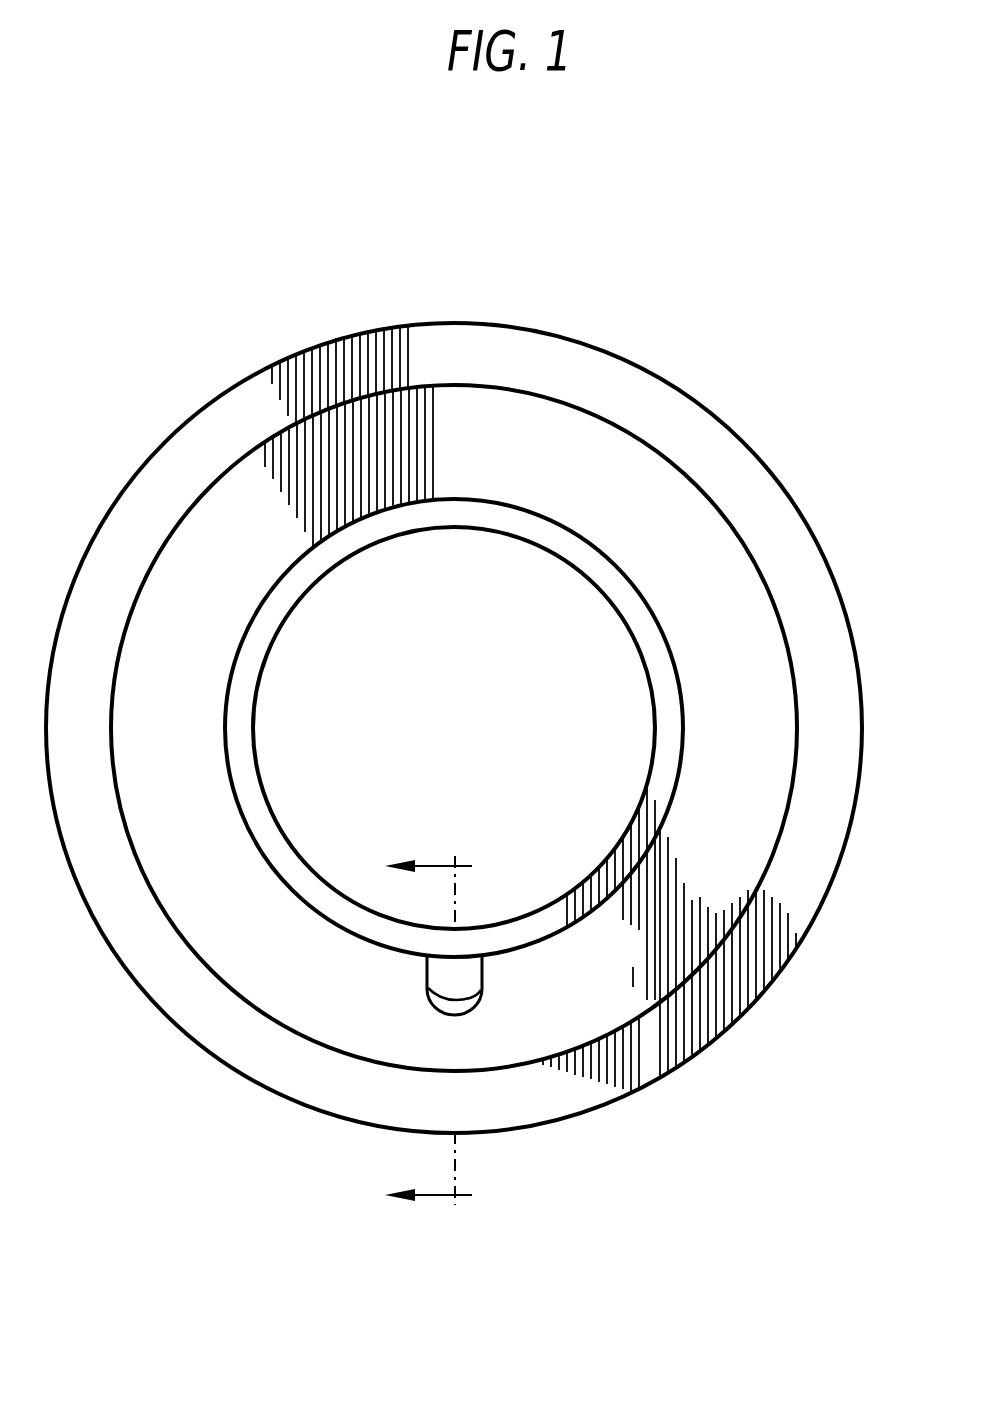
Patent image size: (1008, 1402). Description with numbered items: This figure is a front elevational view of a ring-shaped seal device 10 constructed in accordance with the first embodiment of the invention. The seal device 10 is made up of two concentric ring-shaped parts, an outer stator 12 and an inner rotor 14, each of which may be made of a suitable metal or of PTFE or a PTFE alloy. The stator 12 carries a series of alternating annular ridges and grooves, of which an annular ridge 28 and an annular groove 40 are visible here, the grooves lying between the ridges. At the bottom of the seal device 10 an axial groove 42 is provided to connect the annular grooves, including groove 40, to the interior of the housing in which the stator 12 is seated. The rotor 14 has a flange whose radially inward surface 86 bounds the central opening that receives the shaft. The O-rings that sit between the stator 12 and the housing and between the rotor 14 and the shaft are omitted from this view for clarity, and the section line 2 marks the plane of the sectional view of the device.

The seal device 10 is at (730, 391).
The stator 12 is at (775, 982).
The rotor 14 is at (262, 778).
The annular ridge 28 is at (262, 852).
The annular groove 40 is at (470, 1000).
The axial groove 42 is at (482, 968).
The radially inward surface 86 is at (577, 570).
The section line 2- 2 is at (428, 1032).